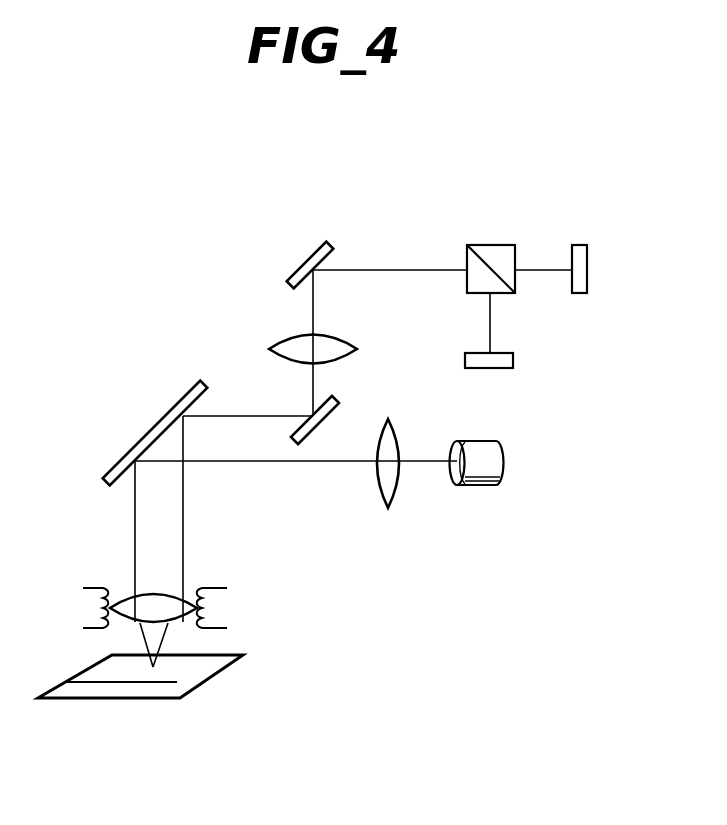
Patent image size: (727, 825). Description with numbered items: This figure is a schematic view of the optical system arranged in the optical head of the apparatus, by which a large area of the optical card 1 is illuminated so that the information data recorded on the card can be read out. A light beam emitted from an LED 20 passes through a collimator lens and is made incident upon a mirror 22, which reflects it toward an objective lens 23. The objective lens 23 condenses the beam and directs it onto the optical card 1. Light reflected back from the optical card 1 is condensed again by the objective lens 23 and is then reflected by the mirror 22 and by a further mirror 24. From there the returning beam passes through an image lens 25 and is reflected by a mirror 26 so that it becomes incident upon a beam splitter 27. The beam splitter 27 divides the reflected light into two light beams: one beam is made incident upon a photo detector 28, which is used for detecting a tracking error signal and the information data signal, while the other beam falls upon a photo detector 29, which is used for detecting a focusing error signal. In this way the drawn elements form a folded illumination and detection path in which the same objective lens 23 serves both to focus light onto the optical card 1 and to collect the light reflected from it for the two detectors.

The optical card 1 is at (220, 677).
The LED 20 is at (507, 455).
The mirror 22 is at (167, 413).
The objective lens 23 is at (187, 600).
The mirror 24 is at (340, 412).
The image lens 25 is at (280, 342).
The mirror 26 is at (328, 242).
The beam splitter 27 is at (497, 243).
The photo detector 28 is at (587, 243).
The photo detector 29 is at (515, 361).